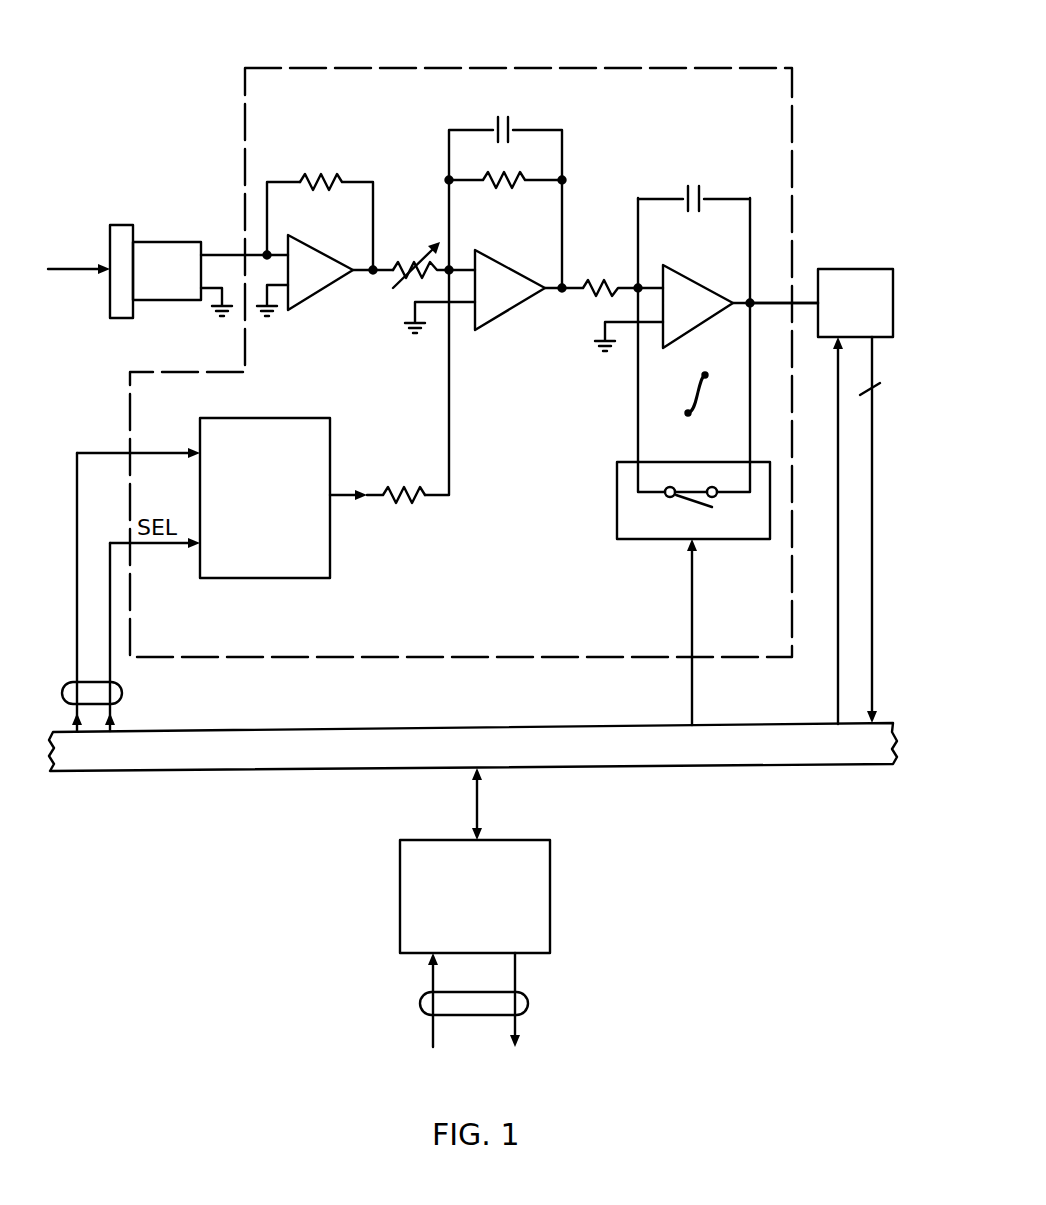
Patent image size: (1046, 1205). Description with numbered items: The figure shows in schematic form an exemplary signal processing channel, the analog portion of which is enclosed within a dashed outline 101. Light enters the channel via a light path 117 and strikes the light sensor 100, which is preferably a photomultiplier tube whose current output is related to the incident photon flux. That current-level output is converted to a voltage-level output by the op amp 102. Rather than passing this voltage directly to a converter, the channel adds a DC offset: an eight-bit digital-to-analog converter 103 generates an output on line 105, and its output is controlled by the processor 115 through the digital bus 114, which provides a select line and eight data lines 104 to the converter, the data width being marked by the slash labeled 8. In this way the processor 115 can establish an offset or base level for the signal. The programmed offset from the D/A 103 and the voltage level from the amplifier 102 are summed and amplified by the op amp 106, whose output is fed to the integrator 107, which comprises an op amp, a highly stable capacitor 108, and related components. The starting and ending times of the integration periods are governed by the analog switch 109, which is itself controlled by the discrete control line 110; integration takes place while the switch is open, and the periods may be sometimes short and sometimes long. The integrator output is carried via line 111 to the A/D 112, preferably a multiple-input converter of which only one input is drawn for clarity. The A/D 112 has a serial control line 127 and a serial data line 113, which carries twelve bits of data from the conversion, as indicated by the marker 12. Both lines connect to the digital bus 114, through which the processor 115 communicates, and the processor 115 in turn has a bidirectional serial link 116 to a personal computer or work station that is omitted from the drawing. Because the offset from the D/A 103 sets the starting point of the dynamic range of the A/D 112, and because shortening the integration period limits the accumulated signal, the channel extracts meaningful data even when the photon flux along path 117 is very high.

The analog signal processing circuit 101 is at (296, 66).
The light path 117 is at (77, 263).
The light sensor 100 is at (167, 240).
The op amp 102 is at (320, 176).
The op amp 106 is at (508, 311).
The line 105 is at (450, 425).
The digital-to-analog converter 103 is at (272, 580).
The 8-bit data input 8 is at (157, 466).
The data lines 104 is at (122, 693).
The integrator 107 is at (690, 276).
The capacitor 108 is at (690, 185).
The analog switch 109 is at (617, 497).
The discrete control line 110 is at (690, 694).
The line 111 is at (799, 300).
The analog-to-digital converter 112 is at (848, 268).
The serial control line 127 is at (838, 700).
The serial data line 113 is at (872, 475).
The 12-bit data path 12 is at (883, 375).
The digital bus 114 is at (270, 770).
The processor 115 is at (550, 901).
The bidirectional serial link 116 is at (528, 1003).